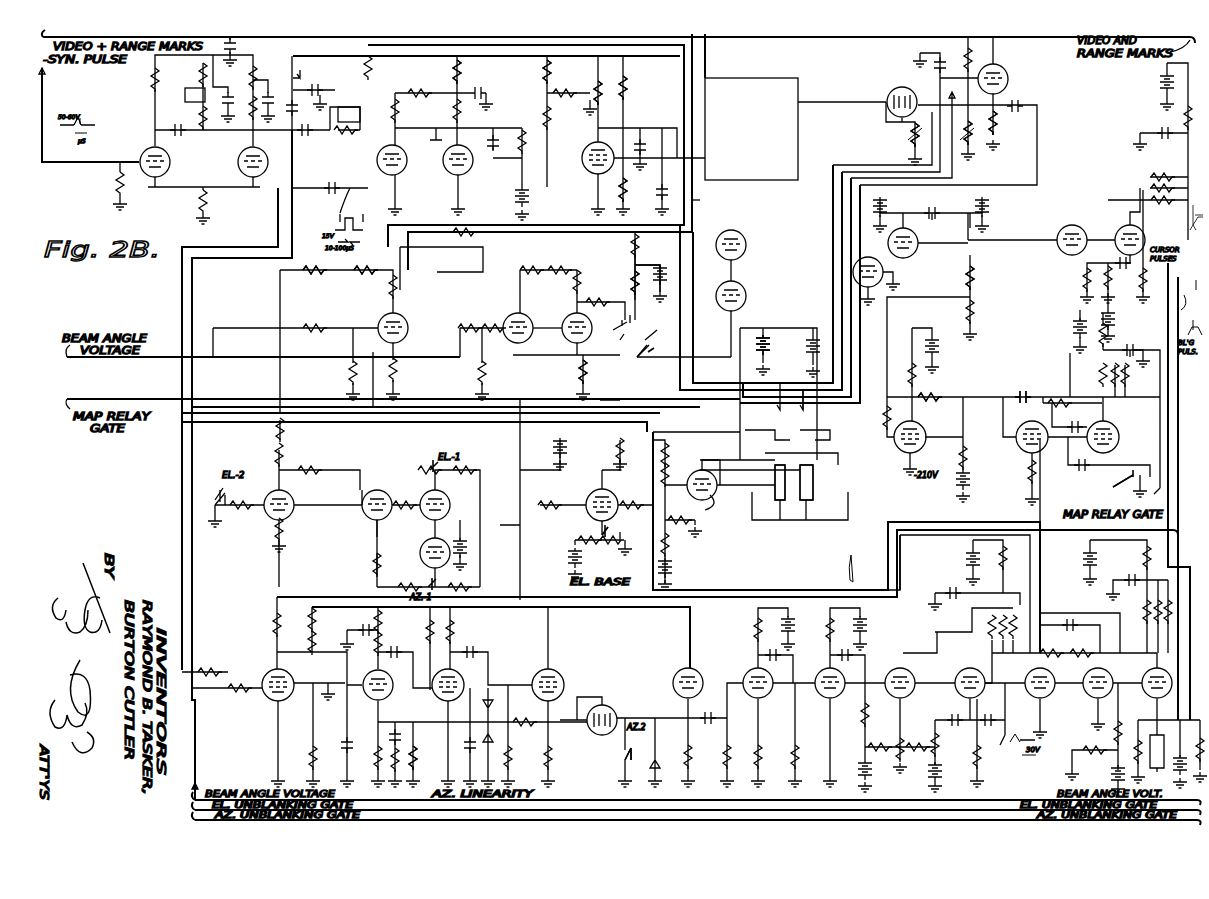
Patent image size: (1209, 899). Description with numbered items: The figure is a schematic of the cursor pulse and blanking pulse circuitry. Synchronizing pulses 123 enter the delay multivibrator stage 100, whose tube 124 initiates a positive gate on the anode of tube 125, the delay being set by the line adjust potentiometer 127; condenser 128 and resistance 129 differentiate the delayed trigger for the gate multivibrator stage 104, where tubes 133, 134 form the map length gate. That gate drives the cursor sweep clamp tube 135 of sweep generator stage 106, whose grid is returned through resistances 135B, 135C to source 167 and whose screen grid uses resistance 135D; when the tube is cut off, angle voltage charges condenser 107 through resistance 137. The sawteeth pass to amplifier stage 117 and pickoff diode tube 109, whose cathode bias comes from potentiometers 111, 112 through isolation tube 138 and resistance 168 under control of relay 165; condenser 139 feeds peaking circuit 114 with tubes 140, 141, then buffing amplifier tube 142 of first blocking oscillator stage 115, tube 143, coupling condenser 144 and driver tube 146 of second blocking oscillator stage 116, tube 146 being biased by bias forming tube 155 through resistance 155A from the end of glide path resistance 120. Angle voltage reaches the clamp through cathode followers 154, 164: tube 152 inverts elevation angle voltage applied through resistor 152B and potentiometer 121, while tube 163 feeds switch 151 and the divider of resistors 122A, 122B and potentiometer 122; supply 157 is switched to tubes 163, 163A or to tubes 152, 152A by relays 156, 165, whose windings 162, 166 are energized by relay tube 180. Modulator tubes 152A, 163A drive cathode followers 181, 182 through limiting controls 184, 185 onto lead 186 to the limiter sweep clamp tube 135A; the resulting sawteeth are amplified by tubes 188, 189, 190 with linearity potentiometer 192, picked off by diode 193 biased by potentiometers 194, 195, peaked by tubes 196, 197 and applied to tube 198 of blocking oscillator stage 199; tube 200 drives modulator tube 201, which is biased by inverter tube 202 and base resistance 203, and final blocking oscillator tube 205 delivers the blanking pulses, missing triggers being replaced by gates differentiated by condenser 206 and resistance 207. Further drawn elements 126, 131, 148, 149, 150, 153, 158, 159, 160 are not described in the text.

The variable delay multivibrator stage 100 is at (140, 103).
The variable length gate multivibrator stage 104 is at (422, 80).
The sweep generator stage 106 is at (642, 106).
The condenser 107 is at (660, 186).
The pickoff diode tube 109 is at (892, 90).
The end of glide path potentiometer resistance 111 is at (905, 142).
The distance to runway potentiometer 112 is at (974, 143).
The peaking circuit 114 is at (919, 207).
The first blocking oscillator stage 115 is at (1101, 180).
The second blocking oscillator stage 116 is at (1049, 394).
The amplifier stage 117 is at (798, 147).
The end of glide path resistance 120 is at (442, 252).
The glide path angle at origin control potentiometer resistance 121 is at (393, 236).
The course line angle at origin control potentiometer 122 is at (646, 352).
The resistor 122A is at (627, 287).
The resistor 122B is at (580, 383).
The synchronizing pulses 123 is at (97, 127).
The delay gate multivibrator tube 124 is at (162, 172).
The tube 125 is at (248, 170).
The capacitor 126 is at (180, 138).
The line adjust potentiometer resistance 127 is at (195, 92).
The condenser 128 is at (305, 138).
The resistance 129 is at (346, 133).
The resistor 131 is at (368, 70).
The normally conducting tube 133 is at (409, 174).
The tube 134 is at (472, 174).
The cursor sweep clamp tube 135 is at (586, 176).
The limiter sweep clamp tube 135A is at (267, 678).
The resistance 135B is at (547, 118).
The resistance 135C is at (540, 70).
The resistance 135D is at (630, 86).
The resistance 137 is at (595, 91).
The isolation tube 138 is at (1007, 66).
The condenser 139 is at (1017, 105).
The tube 140 is at (917, 254).
The tube 141 is at (970, 276).
The blocking oscillator buffing amplifier tube 142 is at (1060, 227).
The tube 143 is at (1115, 227).
The coupling condenser 144 is at (1023, 388).
The second blocking oscillator driver tube 146 is at (1020, 445).
The tube 148 is at (1117, 447).
The switch 149 is at (1127, 480).
The bus lead 150 is at (352, 107).
The single pole single throw switch 151 is at (626, 332).
The tube 152 is at (378, 321).
The angle voltage modulator tube 152A is at (291, 517).
The resistor 152B is at (422, 285).
The battery 153 is at (644, 260).
The cathode follower tube 154 is at (746, 250).
The bias forming tube 155 is at (925, 452).
The resistance 155A is at (933, 397).
The relay 156 is at (693, 203).
The plus three hundred volt D.-C. supply circuit 157 is at (766, 337).
The resistor 158 is at (312, 275).
The resistor 159 is at (367, 275).
The resistor 160 is at (391, 295).
The relay winding 162 is at (780, 500).
The tube 163 is at (523, 316).
The angle voltage modulator tube 163A is at (573, 343).
The tube 164 is at (746, 285).
The Az.-El. relay 165 is at (805, 389).
The relay winding 166 is at (806, 500).
The source 167 is at (238, 47).
The resistance 168 is at (996, 123).
The relay tube 180 is at (707, 497).
The cathode follower tube 181 is at (445, 527).
The cathode follower tube 182 is at (445, 563).
The El.-1 potentiometer 184 is at (433, 468).
The Az.-1 potentiometer 185 is at (446, 589).
The lead 186 is at (327, 597).
The tube 188 is at (382, 698).
The tube 189 is at (457, 682).
The tube 190 is at (552, 670).
The Az.-Linearity potentiometer 192 is at (413, 770).
The diode pick-off tube 193 is at (596, 735).
The Az.-2 potentiometer 194 is at (620, 762).
The El.-2 potentiometer 195 is at (216, 515).
The peaking amplifier tube 196 is at (750, 673).
The peaking amplifier tube 197 is at (825, 698).
The tube 198 is at (885, 668).
The first blocking oscillator stage 199 is at (917, 612).
The tube 200 is at (958, 695).
The modulator tube 201 is at (1050, 695).
The inverter tube 202 is at (607, 497).
The El. Base resistance 203 is at (606, 540).
The final blocking oscillator tube 205 is at (1150, 695).
The condenser 206 is at (340, 186).
The resistance 207 is at (1113, 738).